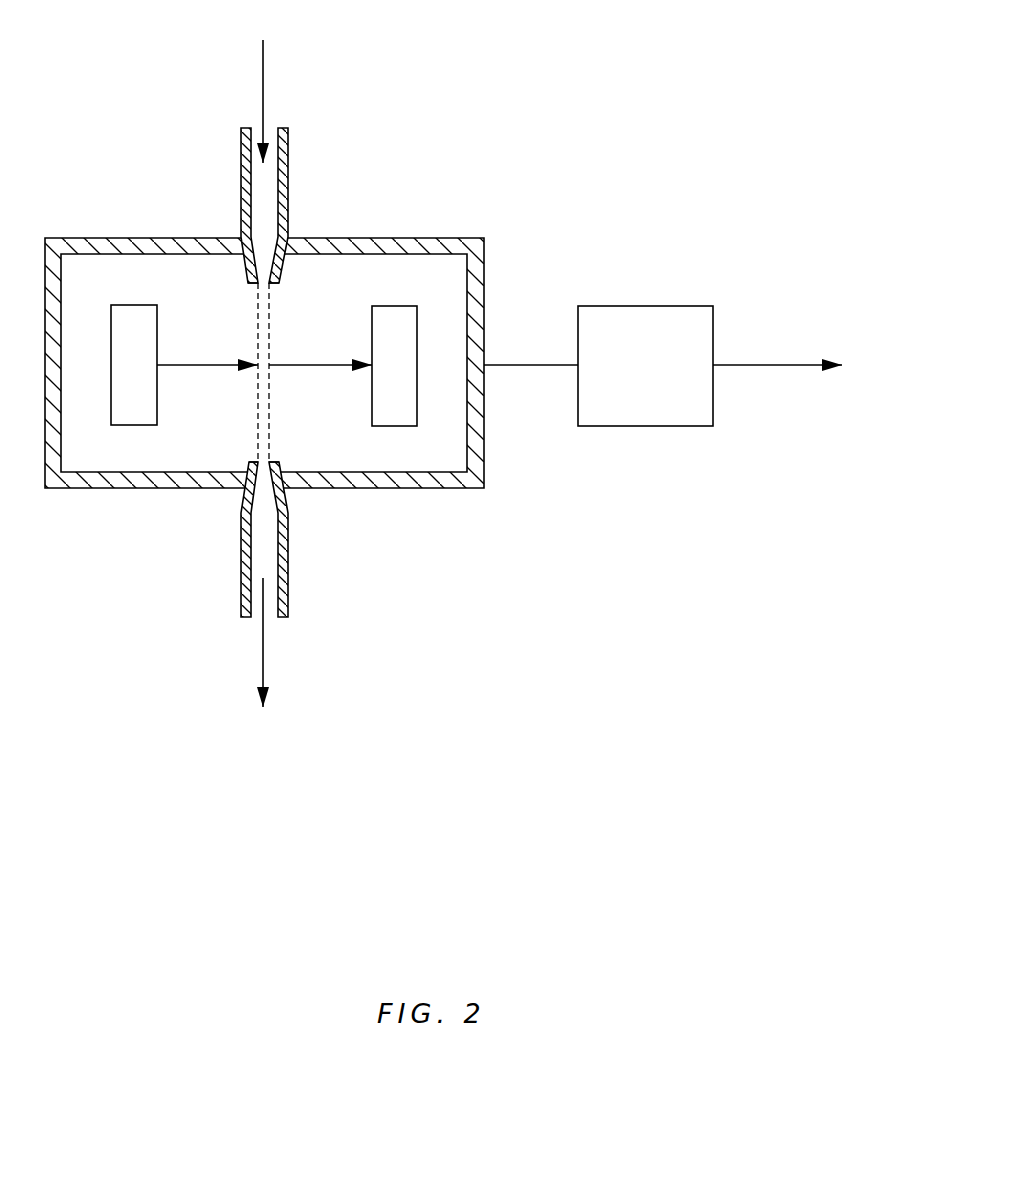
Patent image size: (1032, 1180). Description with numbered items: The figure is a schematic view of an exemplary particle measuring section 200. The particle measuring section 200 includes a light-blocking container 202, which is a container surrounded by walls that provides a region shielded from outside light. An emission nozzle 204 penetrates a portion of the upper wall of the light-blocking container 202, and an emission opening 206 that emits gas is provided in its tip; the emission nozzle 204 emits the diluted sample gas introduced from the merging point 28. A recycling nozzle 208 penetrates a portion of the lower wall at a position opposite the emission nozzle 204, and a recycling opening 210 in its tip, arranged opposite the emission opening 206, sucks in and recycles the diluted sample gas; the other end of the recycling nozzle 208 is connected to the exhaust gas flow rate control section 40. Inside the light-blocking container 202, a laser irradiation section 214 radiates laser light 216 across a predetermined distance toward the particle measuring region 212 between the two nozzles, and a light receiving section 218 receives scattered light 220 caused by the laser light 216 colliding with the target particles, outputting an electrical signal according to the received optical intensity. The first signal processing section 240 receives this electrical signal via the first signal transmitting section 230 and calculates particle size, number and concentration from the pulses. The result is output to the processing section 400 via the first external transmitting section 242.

The particle measuring section 200 is at (471, 416).
The light-blocking container 202 is at (420, 237).
The emission nozzle 204 is at (288, 175).
The emission opening 206 is at (265, 288).
The recycling nozzle 208 is at (289, 567).
The recycling opening 210 is at (265, 456).
The particle measuring region 212 is at (258, 323).
The laser irradiation section 214 is at (140, 305).
The laser light 216 is at (202, 367).
The light receiving section 218 is at (397, 305).
The scattered light 220 is at (315, 367).
The first signal transmitting section 230 is at (530, 363).
The first signal processing section 240 is at (648, 305).
The first external transmitting section 242 is at (766, 363).
The processing section 400 is at (871, 368).
The merging point 28 is at (265, 84).
The exhaust gas flow rate control section 40 is at (263, 658).